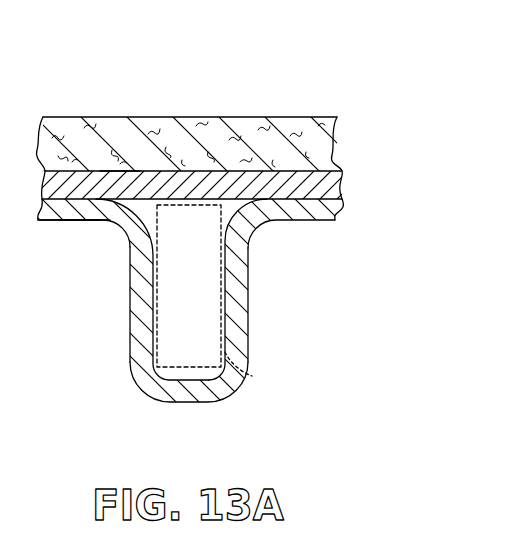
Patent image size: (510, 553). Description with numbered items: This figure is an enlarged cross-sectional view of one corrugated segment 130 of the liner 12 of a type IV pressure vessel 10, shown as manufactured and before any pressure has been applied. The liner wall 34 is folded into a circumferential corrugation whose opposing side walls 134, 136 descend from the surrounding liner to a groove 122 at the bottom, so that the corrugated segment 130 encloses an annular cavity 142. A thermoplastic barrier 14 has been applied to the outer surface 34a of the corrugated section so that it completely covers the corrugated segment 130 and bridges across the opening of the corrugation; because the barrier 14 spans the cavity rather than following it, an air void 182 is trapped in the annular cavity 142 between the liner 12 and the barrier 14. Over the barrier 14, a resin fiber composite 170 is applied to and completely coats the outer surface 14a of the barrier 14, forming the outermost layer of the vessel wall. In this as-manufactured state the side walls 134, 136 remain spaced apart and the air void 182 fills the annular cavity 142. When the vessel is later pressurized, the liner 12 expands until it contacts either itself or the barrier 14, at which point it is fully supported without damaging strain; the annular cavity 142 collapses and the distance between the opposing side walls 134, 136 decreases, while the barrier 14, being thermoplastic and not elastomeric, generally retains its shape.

The pressure vessel 10 is at (255, 239).
The liner 12 is at (86, 232).
The barrier 14 is at (189, 126).
The outer surface of the barrier 14a is at (108, 171).
The liner wall 34 is at (328, 209).
The outer surface of the corrugated section 34a is at (84, 198).
The groove 122 is at (193, 380).
The corrugated segment 130 is at (248, 315).
The side wall 134 is at (158, 345).
The side wall 136 is at (222, 305).
The annular cavity 142 is at (193, 287).
The resin fiber composite 170 is at (314, 108).
The air void 182 is at (252, 376).